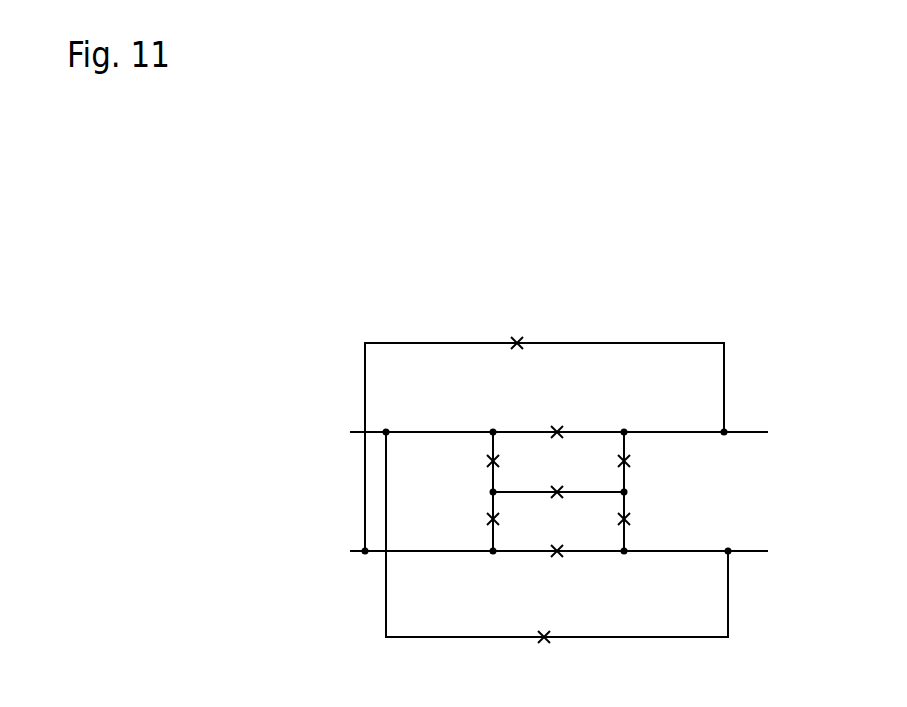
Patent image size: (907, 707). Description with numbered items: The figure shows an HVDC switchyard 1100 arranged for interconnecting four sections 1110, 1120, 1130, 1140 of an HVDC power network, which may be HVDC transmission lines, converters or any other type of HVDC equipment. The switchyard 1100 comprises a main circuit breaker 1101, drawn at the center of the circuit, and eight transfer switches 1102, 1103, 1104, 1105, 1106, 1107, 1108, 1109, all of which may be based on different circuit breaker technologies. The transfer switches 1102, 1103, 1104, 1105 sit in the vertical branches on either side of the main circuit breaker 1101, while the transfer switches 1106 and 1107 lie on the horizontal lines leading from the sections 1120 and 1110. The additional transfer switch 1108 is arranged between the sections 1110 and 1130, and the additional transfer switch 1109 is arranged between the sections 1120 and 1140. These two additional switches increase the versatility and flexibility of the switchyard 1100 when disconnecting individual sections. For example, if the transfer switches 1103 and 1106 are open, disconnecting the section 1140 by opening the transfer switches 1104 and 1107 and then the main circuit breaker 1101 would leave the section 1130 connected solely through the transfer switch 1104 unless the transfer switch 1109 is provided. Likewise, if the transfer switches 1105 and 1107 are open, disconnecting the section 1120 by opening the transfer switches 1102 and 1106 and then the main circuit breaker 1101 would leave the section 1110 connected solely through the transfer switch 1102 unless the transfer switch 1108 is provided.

The switchyard 1100 is at (343, 706).
The main circuit breaker 1101 is at (568, 472).
The transfer switch 1102 is at (455, 520).
The transfer switch 1103 is at (455, 462).
The transfer switch 1104 is at (662, 462).
The transfer switch 1105 is at (661, 523).
The transfer switch 1106 is at (551, 415).
The transfer switch 1107 is at (568, 570).
The transfer switch 1108 is at (521, 323).
The transfer switch 1109 is at (545, 657).
The section 1110 is at (350, 551).
The section 1120 is at (350, 432).
The section 1130 is at (770, 432).
The section 1140 is at (770, 551).